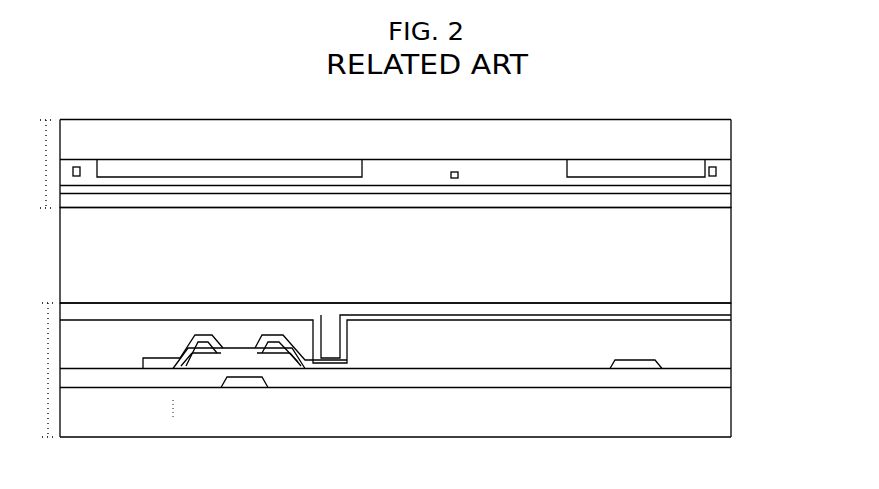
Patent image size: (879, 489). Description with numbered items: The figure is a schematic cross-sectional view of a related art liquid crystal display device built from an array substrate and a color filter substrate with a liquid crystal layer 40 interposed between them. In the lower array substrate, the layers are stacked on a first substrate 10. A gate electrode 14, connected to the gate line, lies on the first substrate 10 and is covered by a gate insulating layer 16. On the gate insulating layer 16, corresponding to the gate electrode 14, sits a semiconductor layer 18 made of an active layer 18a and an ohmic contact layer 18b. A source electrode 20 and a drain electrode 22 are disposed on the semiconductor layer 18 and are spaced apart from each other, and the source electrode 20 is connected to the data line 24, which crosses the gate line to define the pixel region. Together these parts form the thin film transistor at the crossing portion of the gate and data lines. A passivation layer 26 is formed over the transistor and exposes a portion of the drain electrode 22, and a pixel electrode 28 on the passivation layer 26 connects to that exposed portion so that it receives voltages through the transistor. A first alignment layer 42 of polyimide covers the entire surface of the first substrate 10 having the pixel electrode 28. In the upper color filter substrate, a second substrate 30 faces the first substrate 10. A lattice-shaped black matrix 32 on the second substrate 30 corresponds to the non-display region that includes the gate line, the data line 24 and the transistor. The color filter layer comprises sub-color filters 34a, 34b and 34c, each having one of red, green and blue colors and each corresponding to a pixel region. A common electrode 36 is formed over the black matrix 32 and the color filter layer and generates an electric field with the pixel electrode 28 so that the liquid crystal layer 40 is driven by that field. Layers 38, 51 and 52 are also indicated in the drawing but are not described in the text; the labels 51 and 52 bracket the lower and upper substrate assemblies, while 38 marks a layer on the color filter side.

The first substrate 10 is at (395, 413).
The gate electrode 14 is at (247, 389).
The gate insulating layer 16 is at (322, 380).
The semiconductor layer 18 is at (206, 468).
The active layer 18a is at (222, 372).
The ohmic contact layer 18b is at (202, 372).
The source electrode 20 is at (216, 333).
The drain electrode 22 is at (279, 333).
The data line 24 is at (160, 356).
The passivation layer 26 is at (735, 345).
The pixel electrode 28 is at (465, 323).
The second substrate 30 is at (735, 257).
The black matrix 32 is at (395, 164).
The sub-color filter 34a is at (91, 150).
The sub-color filter 34b is at (453, 170).
The sub-color filter 34c is at (724, 153).
The common electrode 36 is at (236, 152).
The overcoat layer 38 is at (735, 186).
The liquid crystal layer 40 is at (735, 310).
The first alignment layer 42 is at (735, 207).
The array substrate 51 is at (46, 370).
The color filter substrate 52 is at (45, 164).